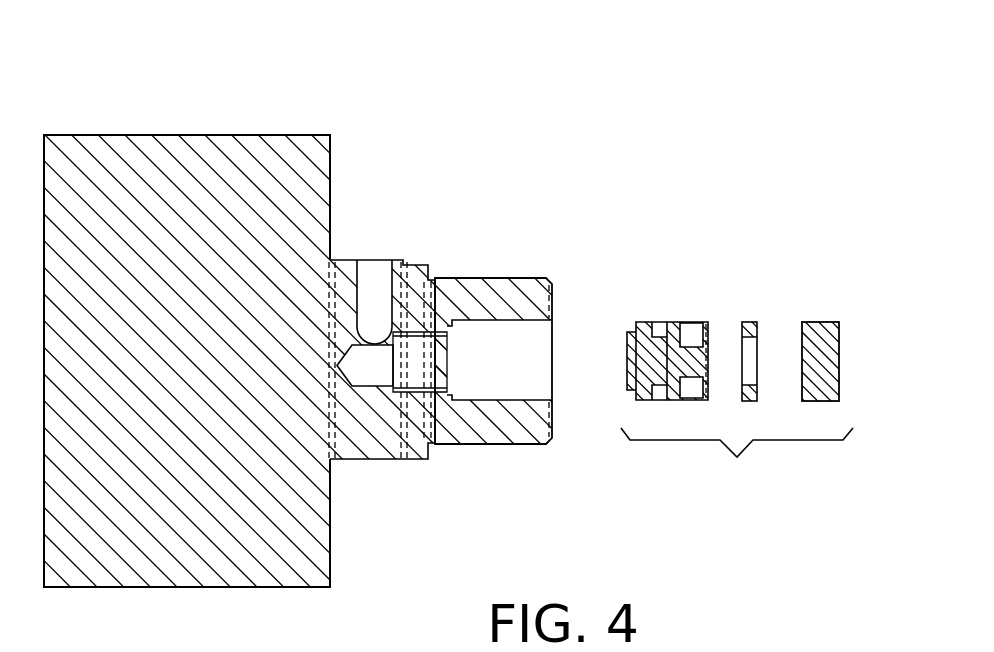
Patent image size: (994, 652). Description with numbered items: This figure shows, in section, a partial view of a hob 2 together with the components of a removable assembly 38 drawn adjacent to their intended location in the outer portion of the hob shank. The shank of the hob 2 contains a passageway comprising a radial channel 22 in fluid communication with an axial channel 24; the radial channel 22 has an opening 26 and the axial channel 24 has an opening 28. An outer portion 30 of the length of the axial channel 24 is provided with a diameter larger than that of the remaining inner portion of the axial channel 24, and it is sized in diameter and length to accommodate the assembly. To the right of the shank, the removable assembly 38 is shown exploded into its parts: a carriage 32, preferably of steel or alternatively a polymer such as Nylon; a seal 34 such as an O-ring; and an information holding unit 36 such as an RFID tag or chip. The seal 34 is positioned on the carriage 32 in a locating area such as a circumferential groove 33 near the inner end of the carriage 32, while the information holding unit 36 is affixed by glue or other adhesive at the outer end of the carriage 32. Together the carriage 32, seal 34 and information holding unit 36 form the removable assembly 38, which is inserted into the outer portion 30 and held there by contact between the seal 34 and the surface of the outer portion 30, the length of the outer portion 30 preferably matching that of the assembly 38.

The hob 2 is at (202, 135).
The radial channel 22 is at (370, 298).
The axial channel 24 is at (413, 368).
The opening 26 is at (375, 260).
The opening 28 is at (561, 330).
The outer portion 30 is at (512, 380).
The carriage 32 is at (687, 322).
The circumferential groove 33 is at (658, 330).
The seal 34 is at (750, 322).
The information holding unit 36 is at (840, 345).
The removable assembly 38 is at (737, 458).